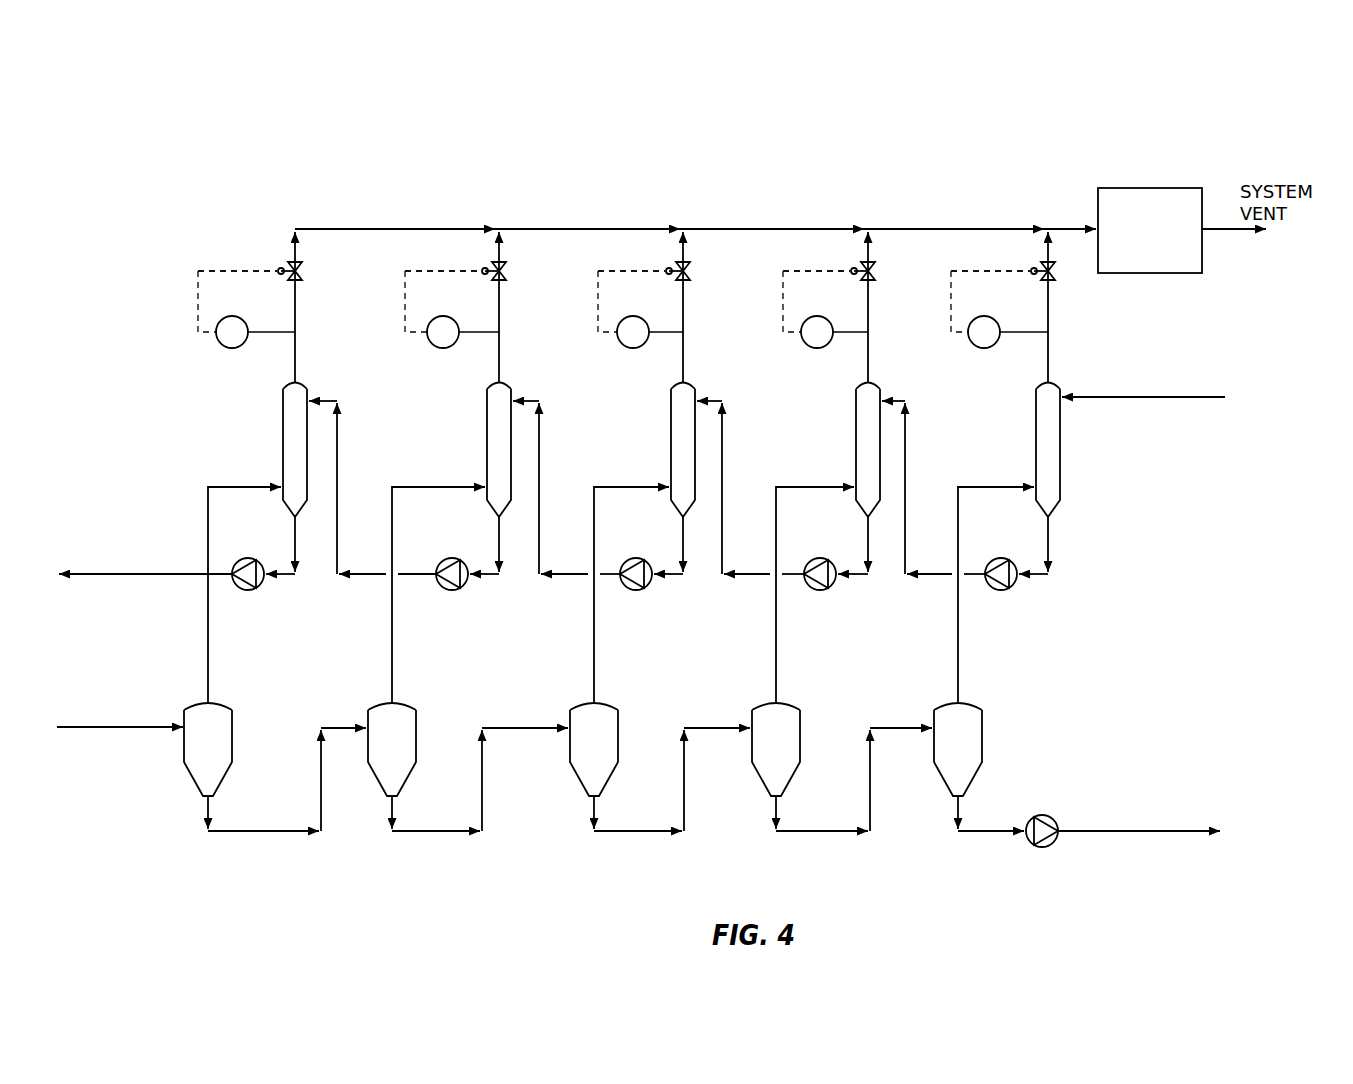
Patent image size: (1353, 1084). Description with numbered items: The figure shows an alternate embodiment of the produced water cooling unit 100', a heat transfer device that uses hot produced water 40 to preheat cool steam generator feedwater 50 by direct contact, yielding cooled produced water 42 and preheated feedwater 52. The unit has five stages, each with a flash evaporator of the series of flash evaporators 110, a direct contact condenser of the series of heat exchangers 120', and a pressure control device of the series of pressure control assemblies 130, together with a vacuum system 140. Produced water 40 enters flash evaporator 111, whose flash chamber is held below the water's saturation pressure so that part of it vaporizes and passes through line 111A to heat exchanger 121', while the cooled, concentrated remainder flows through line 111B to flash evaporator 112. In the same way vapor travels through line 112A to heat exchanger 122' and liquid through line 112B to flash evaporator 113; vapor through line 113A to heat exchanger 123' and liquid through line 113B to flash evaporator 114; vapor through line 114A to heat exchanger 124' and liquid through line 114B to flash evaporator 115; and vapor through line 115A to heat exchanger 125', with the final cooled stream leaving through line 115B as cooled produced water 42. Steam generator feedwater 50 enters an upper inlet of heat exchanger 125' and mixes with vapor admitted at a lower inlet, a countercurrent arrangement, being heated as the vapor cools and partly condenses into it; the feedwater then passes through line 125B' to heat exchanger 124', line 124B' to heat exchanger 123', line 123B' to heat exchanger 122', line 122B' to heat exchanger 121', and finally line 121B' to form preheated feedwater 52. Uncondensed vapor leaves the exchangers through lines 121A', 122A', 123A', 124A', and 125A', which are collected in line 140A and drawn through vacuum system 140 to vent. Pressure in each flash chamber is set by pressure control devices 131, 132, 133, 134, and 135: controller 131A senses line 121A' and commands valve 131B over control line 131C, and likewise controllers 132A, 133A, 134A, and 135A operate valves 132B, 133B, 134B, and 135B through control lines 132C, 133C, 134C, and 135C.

The cooling unit 100' is at (1186, 102).
The series of flash evaporators 110 is at (1171, 699).
The flash evaporator 111 is at (233, 716).
The line 111A is at (208, 655).
The line 111B is at (250, 832).
The flash evaporator 112 is at (417, 716).
The line 112A is at (392, 655).
The line 112B is at (414, 832).
The flash evaporator 113 is at (619, 716).
The line 113A is at (594, 655).
The line 113B is at (636, 832).
The flash evaporator 114 is at (801, 716).
The line 114A is at (776, 655).
The line 114B is at (826, 832).
The flash evaporator 115 is at (983, 716).
The line 115A is at (958, 655).
The line 115B is at (1000, 832).
The series of direct heat exchangers 120' is at (1205, 485).
The heat exchanger 121' is at (262, 450).
The line 121A' is at (334, 307).
The line 121B' is at (309, 565).
The heat exchanger 122' is at (466, 450).
The line 122A' is at (539, 307).
The line 122B' is at (512, 565).
The heat exchanger 123' is at (650, 450).
The line 123A' is at (724, 307).
The line 123B' is at (698, 565).
The heat exchanger 124' is at (836, 450).
The line 124A' is at (908, 307).
The line 124B' is at (881, 565).
The heat exchanger 125' is at (1015, 450).
The line 125A' is at (1086, 307).
The line 125B' is at (1061, 564).
The series of pressure control assemblies 130 is at (1092, 307).
The pressure control device 131 is at (194, 268).
The pressure controller 131A is at (232, 316).
The valve 131B is at (288, 265).
The control line 131C is at (237, 271).
The pressure control device 132 is at (403, 266).
The pressure controller 132A is at (443, 316).
The valve 132B is at (492, 265).
The control line 132C is at (428, 271).
The pressure control device 133 is at (596, 266).
The pressure controller 133A is at (633, 316).
The valve 133B is at (676, 265).
The control line 133C is at (618, 271).
The pressure control device 134 is at (781, 266).
The pressure controller 134A is at (817, 316).
The valve 134B is at (861, 265).
The control line 134C is at (800, 271).
The pressure control device 135 is at (953, 268).
The pressure controller 135A is at (984, 316).
The valve 135B is at (1041, 265).
The control line 135C is at (970, 271).
The vacuum system 140 is at (1136, 261).
The line 140A is at (1000, 229).
The produced water 40 is at (120, 728).
The cooled produced water 42 is at (1128, 831).
The steam generator feedwater 50 is at (1172, 397).
The preheated steam generator feedwater 52 is at (150, 578).